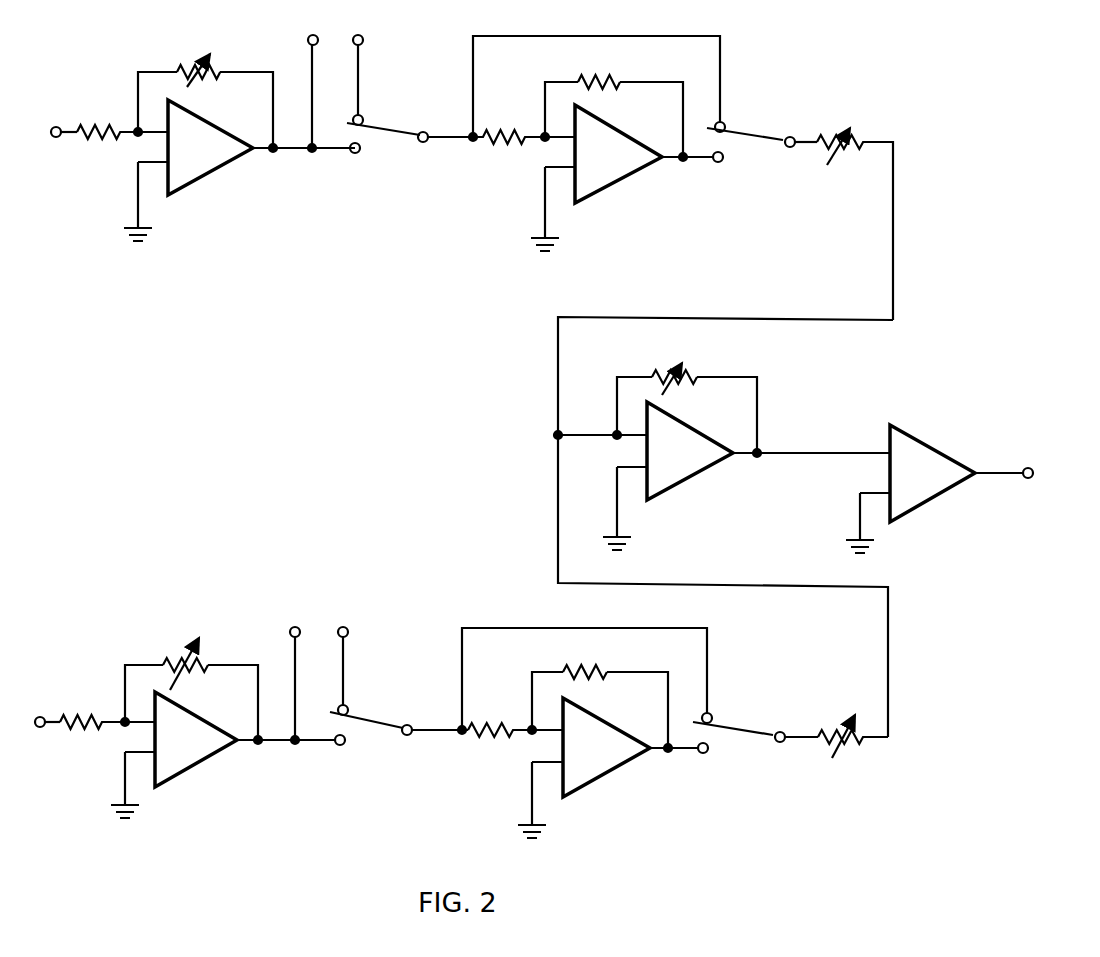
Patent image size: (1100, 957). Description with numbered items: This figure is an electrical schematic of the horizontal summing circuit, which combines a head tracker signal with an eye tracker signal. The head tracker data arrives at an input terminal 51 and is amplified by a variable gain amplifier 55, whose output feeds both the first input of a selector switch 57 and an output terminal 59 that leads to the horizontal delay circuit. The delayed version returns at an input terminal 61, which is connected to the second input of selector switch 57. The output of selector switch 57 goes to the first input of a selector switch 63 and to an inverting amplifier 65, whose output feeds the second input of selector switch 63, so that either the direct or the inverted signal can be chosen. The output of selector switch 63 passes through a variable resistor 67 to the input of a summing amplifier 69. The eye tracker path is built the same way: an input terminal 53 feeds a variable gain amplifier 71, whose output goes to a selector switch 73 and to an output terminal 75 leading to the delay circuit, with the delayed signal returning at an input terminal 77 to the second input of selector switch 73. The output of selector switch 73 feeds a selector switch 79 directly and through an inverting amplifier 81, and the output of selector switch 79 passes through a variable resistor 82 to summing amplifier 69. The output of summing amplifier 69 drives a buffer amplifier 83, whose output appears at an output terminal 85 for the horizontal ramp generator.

The input terminal 51 is at (55, 121).
The input terminal 53 is at (43, 710).
The variable gain amplifier 55 is at (220, 121).
The selector switch 57 is at (390, 127).
The output terminal 59 is at (317, 28).
The input terminal 61 is at (363, 33).
The selector switch 63 is at (752, 130).
The inverting amplifier 65 is at (610, 192).
The variable resistor 67 is at (860, 131).
The summing amplifier 69 is at (697, 477).
The variable gain amplifier 71 is at (200, 765).
The selector switch 73 is at (372, 718).
The output terminal 75 is at (298, 622).
The input terminal 77 is at (348, 623).
The selector switch 79 is at (733, 737).
The inverting amplifier 81 is at (595, 787).
The variable resistor 82 is at (838, 755).
The buffer amplifier 83 is at (950, 445).
The output terminal 85 is at (1040, 470).